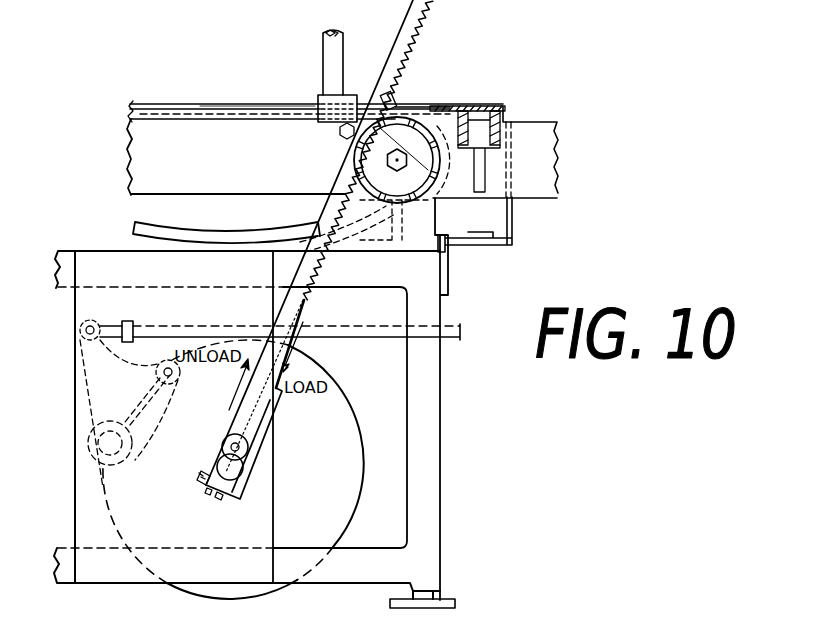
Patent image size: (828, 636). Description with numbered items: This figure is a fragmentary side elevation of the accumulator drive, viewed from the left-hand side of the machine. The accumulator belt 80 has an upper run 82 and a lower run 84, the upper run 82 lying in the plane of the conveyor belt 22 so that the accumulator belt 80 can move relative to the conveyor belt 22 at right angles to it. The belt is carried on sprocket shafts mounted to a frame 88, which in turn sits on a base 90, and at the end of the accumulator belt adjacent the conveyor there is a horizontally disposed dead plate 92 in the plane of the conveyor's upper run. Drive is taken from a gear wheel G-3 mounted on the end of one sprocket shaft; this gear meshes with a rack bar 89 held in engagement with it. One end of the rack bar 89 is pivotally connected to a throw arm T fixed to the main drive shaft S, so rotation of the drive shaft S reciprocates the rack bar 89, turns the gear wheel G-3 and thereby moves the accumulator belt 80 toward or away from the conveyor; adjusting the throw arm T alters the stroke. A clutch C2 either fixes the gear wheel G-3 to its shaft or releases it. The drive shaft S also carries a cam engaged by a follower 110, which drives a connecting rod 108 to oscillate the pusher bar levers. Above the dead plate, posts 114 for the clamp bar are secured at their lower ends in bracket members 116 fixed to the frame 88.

The accumulator belt 80 is at (199, 102).
The upper run 82 is at (270, 105).
The lower run 84 is at (232, 229).
The frame 88 is at (142, 150).
The rack bar 89 is at (273, 268).
The base 90 is at (441, 422).
The dead plate 92 is at (420, 107).
The connecting rod 108 is at (330, 331).
The follower 110 is at (169, 385).
The posts 114 is at (323, 51).
The bracket members 116 is at (318, 96).
The conveyor belt 22 is at (490, 107).
The clutch C2 is at (410, 143).
The gear wheel G-3 is at (347, 142).
The drive shaft S is at (223, 469).
The throw arm T is at (250, 454).